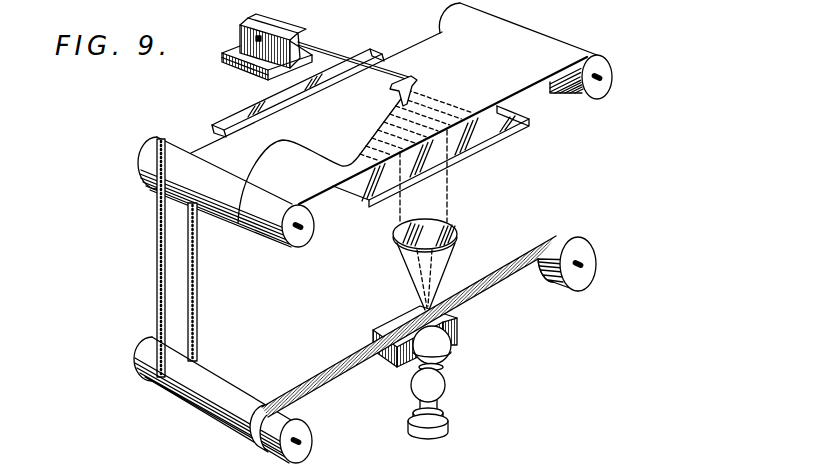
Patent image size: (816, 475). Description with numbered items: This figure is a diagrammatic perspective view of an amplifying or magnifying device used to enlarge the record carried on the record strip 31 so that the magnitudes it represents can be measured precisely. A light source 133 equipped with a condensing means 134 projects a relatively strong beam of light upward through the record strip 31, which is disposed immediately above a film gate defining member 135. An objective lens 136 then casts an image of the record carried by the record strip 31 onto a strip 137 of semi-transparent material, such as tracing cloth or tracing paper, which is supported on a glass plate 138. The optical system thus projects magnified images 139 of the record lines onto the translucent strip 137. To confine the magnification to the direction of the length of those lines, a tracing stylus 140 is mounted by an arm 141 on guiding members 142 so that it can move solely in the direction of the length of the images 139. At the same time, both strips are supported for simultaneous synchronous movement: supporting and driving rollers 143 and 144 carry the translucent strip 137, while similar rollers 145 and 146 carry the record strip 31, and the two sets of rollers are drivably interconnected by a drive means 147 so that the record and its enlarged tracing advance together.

The record strip 31 is at (467, 307).
The light source 133 is at (441, 386).
The condensing means 134 is at (449, 339).
The film gate defining member 135 is at (397, 364).
The objective lens 136 is at (437, 228).
The strip of semi-transparent material 137 is at (522, 94).
The glass plate 138 is at (500, 132).
The magnified images 139 is at (447, 93).
The tracing stylus 140 is at (416, 79).
The arm 141 is at (334, 55).
The guiding members 142 is at (242, 31).
The supporting and driving roller 143 is at (605, 66).
The supporting and driving roller 144 is at (293, 238).
The roller 145 is at (576, 282).
The roller 146 is at (306, 442).
The drive means 147 is at (198, 289).